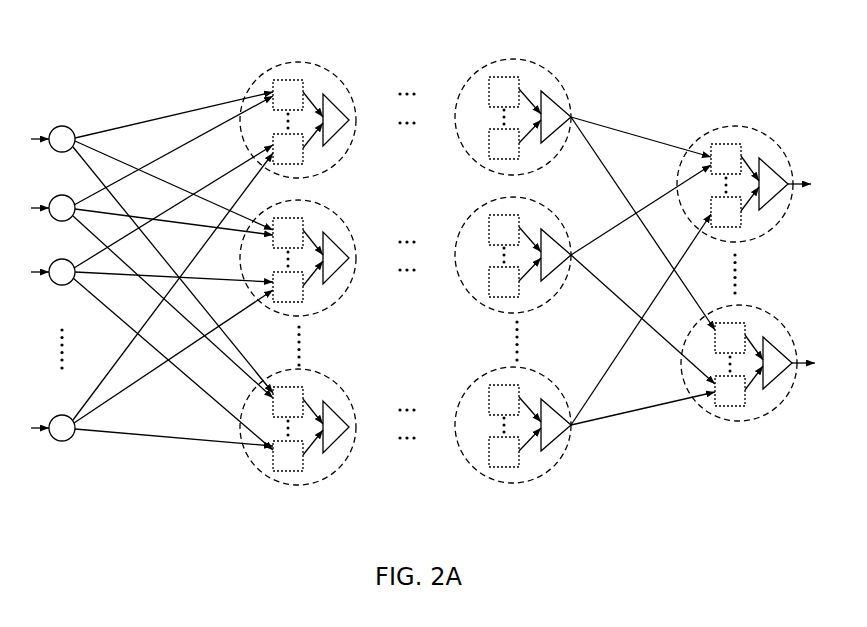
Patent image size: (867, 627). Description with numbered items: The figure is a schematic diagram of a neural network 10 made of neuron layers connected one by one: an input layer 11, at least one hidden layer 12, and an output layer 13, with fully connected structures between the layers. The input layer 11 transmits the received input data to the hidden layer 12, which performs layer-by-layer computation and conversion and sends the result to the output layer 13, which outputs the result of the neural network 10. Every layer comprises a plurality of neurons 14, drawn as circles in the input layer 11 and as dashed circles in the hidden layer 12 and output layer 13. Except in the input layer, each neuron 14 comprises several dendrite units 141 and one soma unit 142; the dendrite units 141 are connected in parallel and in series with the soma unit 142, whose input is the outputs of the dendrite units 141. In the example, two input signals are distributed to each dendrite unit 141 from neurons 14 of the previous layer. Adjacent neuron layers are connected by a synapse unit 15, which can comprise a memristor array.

The neural network 10 is at (397, 47).
The input layer 11 is at (92, 498).
The hidden layer 12 is at (572, 498).
The output layer 13 is at (773, 498).
The neuron 14 is at (69, 125).
The synapse unit 15 is at (252, 498).
The dendrite unit 141 is at (275, 99).
The soma unit 142 is at (355, 105).